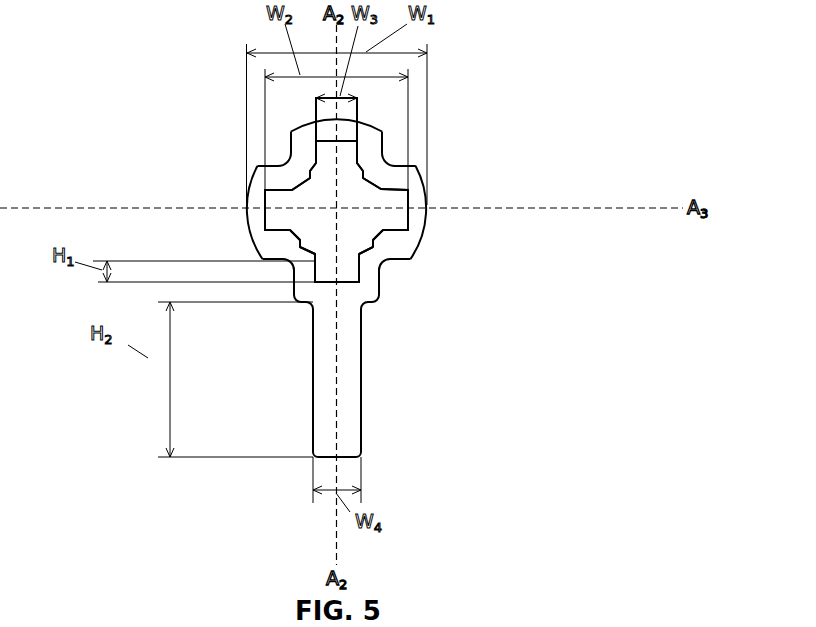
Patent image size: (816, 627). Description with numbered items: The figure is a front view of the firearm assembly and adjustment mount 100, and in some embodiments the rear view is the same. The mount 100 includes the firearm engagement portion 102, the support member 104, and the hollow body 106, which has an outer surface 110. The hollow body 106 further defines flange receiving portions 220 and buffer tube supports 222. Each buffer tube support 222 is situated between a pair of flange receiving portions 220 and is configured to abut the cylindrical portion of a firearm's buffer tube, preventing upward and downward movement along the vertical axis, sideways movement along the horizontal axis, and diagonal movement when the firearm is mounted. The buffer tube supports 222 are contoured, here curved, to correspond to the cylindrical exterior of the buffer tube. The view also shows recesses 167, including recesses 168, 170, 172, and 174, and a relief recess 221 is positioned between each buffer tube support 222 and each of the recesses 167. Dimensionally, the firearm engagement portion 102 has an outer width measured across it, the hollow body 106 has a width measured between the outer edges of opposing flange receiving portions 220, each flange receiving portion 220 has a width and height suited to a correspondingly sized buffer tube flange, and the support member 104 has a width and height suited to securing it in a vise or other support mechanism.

The firearm assembly and adjustment mount 100 is at (183, 111).
The firearm engagement portion 102 is at (422, 104).
The support member 104 is at (364, 390).
The hollow body 106 is at (333, 220).
The outer surface 110 is at (417, 166).
The recesses 167 is at (408, 218).
The recess 168 is at (319, 152).
The recess 170 is at (409, 200).
The recess 172 is at (380, 297).
The recess 174 is at (265, 207).
The flange receiving portion 220 is at (277, 218).
The relief recess 221 is at (293, 187).
The buffer tube support 222 is at (310, 172).